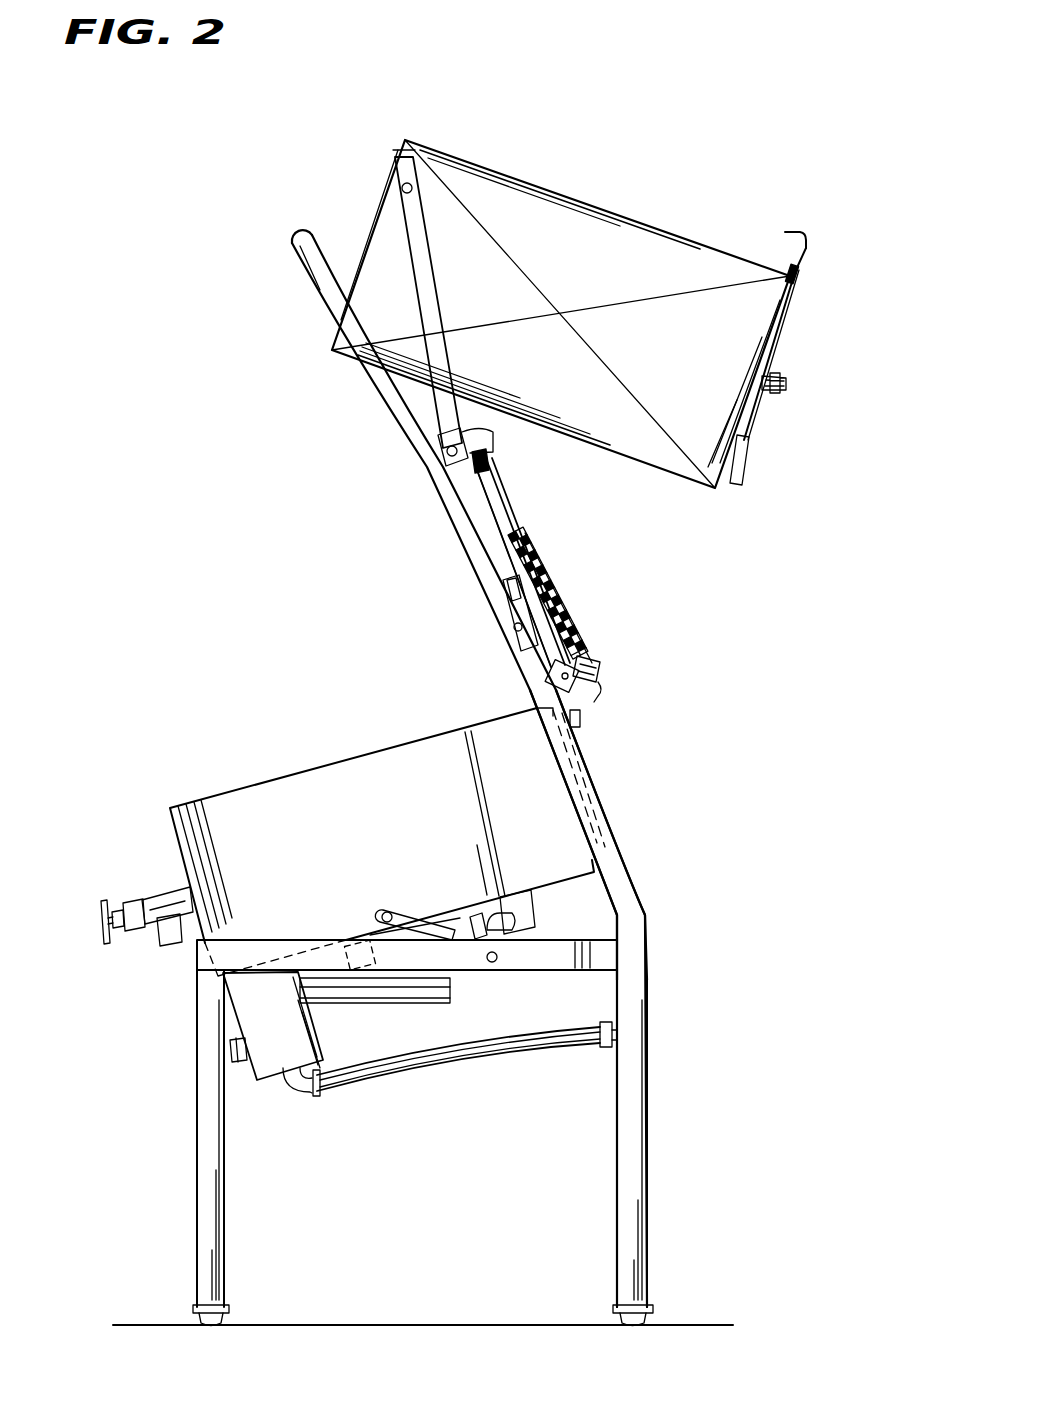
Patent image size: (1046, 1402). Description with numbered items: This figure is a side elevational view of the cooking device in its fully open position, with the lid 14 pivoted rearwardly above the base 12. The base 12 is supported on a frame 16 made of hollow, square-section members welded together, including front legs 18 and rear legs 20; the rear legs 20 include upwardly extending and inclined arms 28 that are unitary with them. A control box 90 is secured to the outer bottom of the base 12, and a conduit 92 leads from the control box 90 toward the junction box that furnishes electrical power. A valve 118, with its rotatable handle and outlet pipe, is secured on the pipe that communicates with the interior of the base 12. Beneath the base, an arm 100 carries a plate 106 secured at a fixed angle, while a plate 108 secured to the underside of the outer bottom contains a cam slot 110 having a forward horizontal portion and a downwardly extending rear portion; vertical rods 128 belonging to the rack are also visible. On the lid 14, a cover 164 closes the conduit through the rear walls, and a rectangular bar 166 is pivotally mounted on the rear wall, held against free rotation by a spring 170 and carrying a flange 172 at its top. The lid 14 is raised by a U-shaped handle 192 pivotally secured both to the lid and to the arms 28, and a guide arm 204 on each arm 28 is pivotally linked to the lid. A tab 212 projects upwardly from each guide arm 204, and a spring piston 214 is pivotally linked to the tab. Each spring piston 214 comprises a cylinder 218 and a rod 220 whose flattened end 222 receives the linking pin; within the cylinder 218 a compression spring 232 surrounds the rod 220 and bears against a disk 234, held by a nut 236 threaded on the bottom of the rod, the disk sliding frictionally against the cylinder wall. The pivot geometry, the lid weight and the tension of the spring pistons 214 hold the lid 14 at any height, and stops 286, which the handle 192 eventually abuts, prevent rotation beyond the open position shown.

The base 12 is at (387, 795).
The lid 14 is at (694, 358).
The frame 16 is at (654, 1082).
The front legs 18 is at (205, 1080).
The rear legs 20 is at (643, 1156).
The arms 28 is at (618, 845).
The control box 90 is at (280, 1014).
The conduit 92 is at (418, 1058).
The arm 100 is at (390, 908).
The plate 106 is at (466, 905).
The plate 108 is at (512, 895).
The cam slot 110 is at (505, 943).
The valve 118 is at (152, 897).
The vertical rods 128 is at (450, 982).
The cover 164 is at (740, 474).
The rectangular bar 166 is at (790, 318).
The spring 170 is at (776, 376).
The flange 172 is at (802, 230).
The U-shaped handle 192 is at (392, 423).
The guide arm 204 is at (432, 303).
The tab 212 is at (486, 437).
The spring piston 214 is at (570, 570).
The cylinder 218 is at (580, 643).
The rod 220 is at (512, 513).
The flattened end 222 is at (488, 462).
The compression spring 232 is at (570, 615).
The disk 234 is at (598, 660).
The nut 236 is at (600, 686).
The stops 286 is at (503, 596).